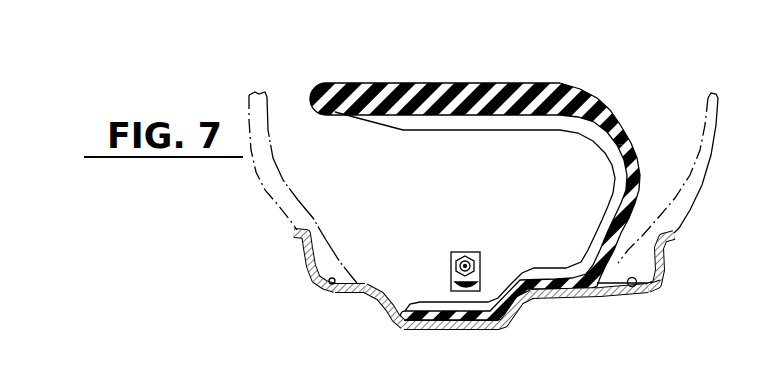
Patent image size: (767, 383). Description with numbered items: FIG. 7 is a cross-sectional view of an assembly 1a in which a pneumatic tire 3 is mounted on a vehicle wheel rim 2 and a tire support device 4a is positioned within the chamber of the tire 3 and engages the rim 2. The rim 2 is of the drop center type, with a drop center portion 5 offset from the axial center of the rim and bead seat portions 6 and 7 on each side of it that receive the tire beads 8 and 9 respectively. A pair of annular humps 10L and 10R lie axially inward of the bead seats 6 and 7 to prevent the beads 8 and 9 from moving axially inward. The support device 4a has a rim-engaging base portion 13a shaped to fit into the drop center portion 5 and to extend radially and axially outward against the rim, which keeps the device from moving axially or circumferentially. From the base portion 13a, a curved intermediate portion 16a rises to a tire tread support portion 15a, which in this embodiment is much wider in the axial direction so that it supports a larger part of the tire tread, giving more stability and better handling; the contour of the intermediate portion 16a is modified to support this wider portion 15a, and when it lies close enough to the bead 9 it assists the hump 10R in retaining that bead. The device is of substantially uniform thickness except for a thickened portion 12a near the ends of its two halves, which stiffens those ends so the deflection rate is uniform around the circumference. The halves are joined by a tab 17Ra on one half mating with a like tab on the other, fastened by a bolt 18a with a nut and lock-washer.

The assembly 1a is at (297, 266).
The vehicle wheel rim 2 is at (660, 281).
The pneumatic tire 3 is at (703, 188).
The tire support device 4a is at (628, 117).
The drop center portion 5 is at (502, 324).
The bead seat portion 6 is at (330, 288).
The bead seat portion 7 is at (632, 287).
The tire bead 8 is at (335, 260).
The tire bead 9 is at (645, 262).
The annular hump 10L is at (377, 300).
The annular hump 10R is at (611, 284).
The thickened portion 12a is at (477, 124).
The rim-engaging base portion 13a is at (384, 311).
The tire tread support portion 15a is at (418, 83).
The curved intermediate portion 16a is at (641, 155).
The tab 17Ra is at (480, 258).
The bolt 18a is at (462, 260).